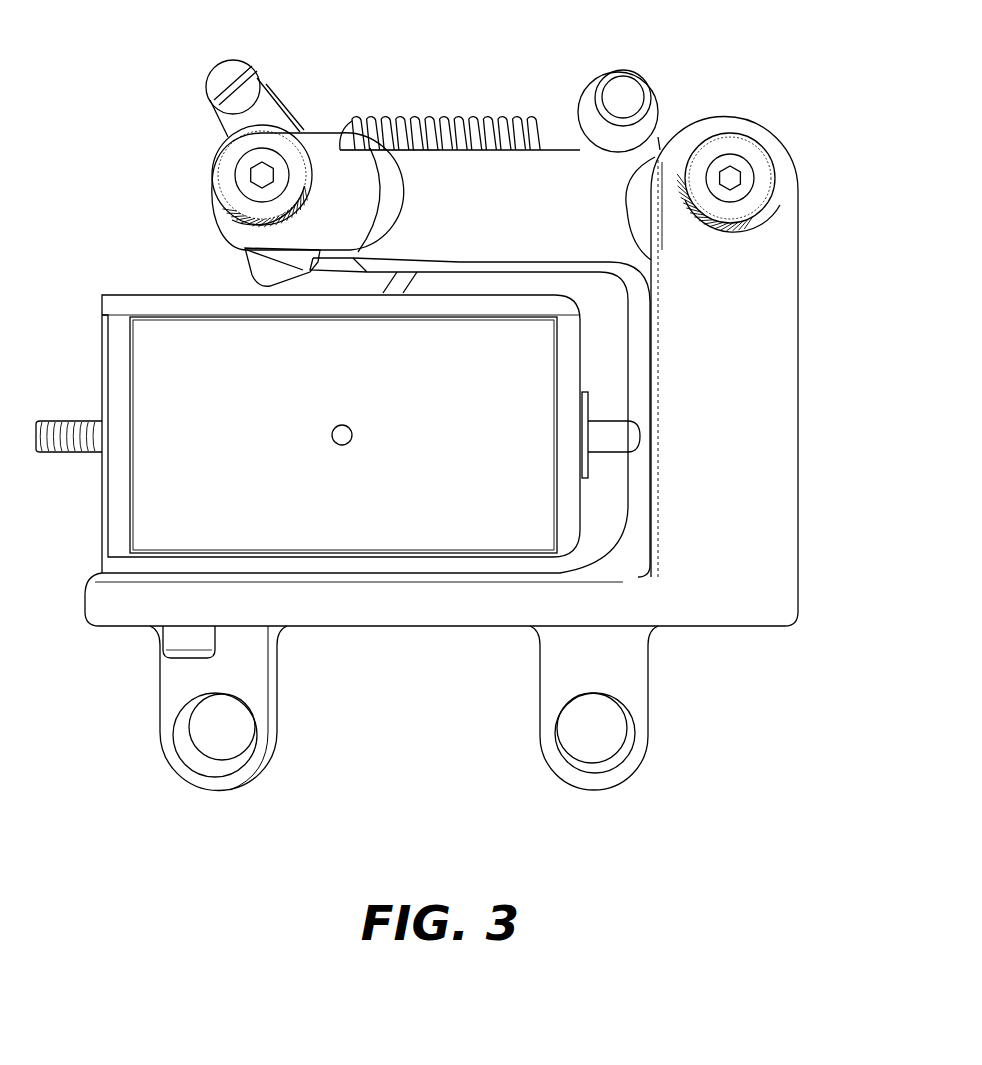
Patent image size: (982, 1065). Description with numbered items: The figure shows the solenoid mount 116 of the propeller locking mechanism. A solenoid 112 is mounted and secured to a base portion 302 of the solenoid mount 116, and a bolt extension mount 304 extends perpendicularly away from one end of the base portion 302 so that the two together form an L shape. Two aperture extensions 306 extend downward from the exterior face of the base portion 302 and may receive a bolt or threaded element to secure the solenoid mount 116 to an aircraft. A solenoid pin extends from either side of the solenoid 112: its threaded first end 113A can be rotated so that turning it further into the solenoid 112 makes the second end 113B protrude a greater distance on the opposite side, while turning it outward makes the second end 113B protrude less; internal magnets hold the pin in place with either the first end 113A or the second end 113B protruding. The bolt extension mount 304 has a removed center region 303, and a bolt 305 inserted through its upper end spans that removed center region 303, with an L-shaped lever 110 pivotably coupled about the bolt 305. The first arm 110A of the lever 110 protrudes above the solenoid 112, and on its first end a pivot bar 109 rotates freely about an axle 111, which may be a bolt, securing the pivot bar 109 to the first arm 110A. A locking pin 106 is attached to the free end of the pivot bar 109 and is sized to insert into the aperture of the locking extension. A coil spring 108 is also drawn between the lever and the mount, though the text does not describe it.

The locking pin 106 is at (213, 72).
The spring 108 is at (388, 123).
The pivot bar 109 is at (262, 272).
The lever 110 is at (518, 185).
The first arm 110A is at (433, 197).
The axle 111 is at (238, 177).
The solenoid 112 is at (178, 338).
The first end of solenoid pin 113A is at (57, 452).
The second end of solenoid pin 113B is at (605, 441).
The solenoid mount 116 is at (815, 557).
The base portion 302 is at (455, 626).
The removed center region 303 is at (822, 457).
The bolt extension mount 304 is at (773, 345).
The bolt 305 is at (747, 180).
The aperture extensions 306 is at (183, 722).